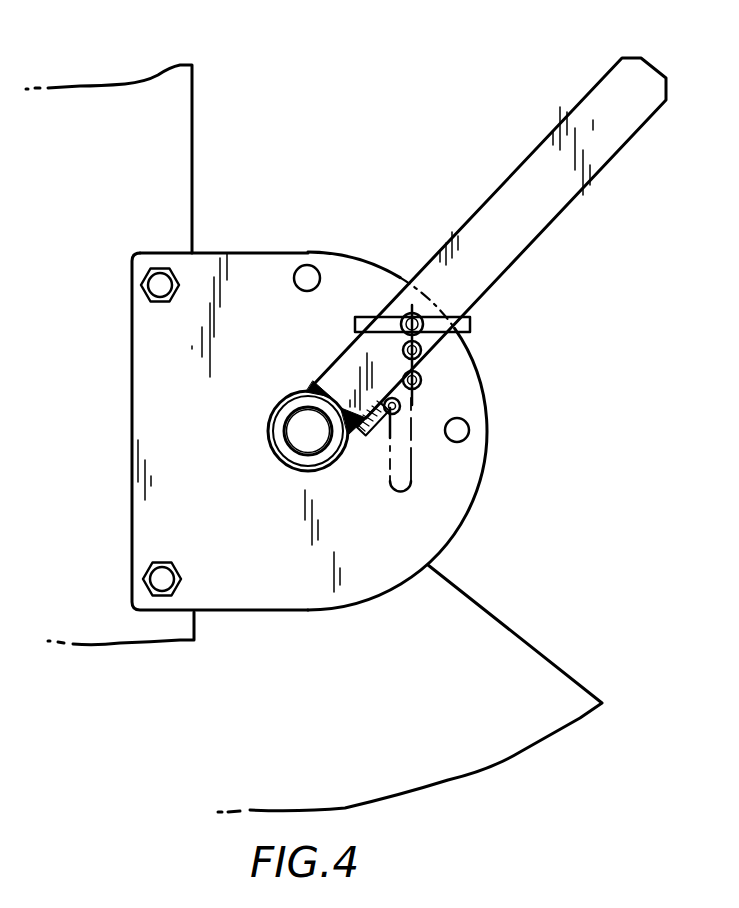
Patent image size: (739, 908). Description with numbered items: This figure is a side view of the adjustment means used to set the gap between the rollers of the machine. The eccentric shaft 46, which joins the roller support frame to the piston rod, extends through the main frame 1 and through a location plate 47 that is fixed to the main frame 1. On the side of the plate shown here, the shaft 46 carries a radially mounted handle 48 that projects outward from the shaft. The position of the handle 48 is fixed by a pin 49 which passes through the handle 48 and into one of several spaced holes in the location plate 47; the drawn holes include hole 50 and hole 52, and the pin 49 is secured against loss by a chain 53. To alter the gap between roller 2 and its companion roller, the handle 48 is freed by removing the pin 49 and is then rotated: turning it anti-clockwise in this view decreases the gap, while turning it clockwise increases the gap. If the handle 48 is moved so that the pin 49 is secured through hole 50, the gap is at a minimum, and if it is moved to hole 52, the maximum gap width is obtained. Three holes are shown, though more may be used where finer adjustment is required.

The main frame 1 is at (158, 173).
The roller 2 is at (513, 646).
The eccentric shaft 46 is at (302, 433).
The location plate 47 is at (428, 527).
The handle 48 is at (521, 236).
The pin 49 is at (410, 312).
The hole 50 is at (309, 266).
The hole 52 is at (468, 436).
The chain 53 is at (421, 381).